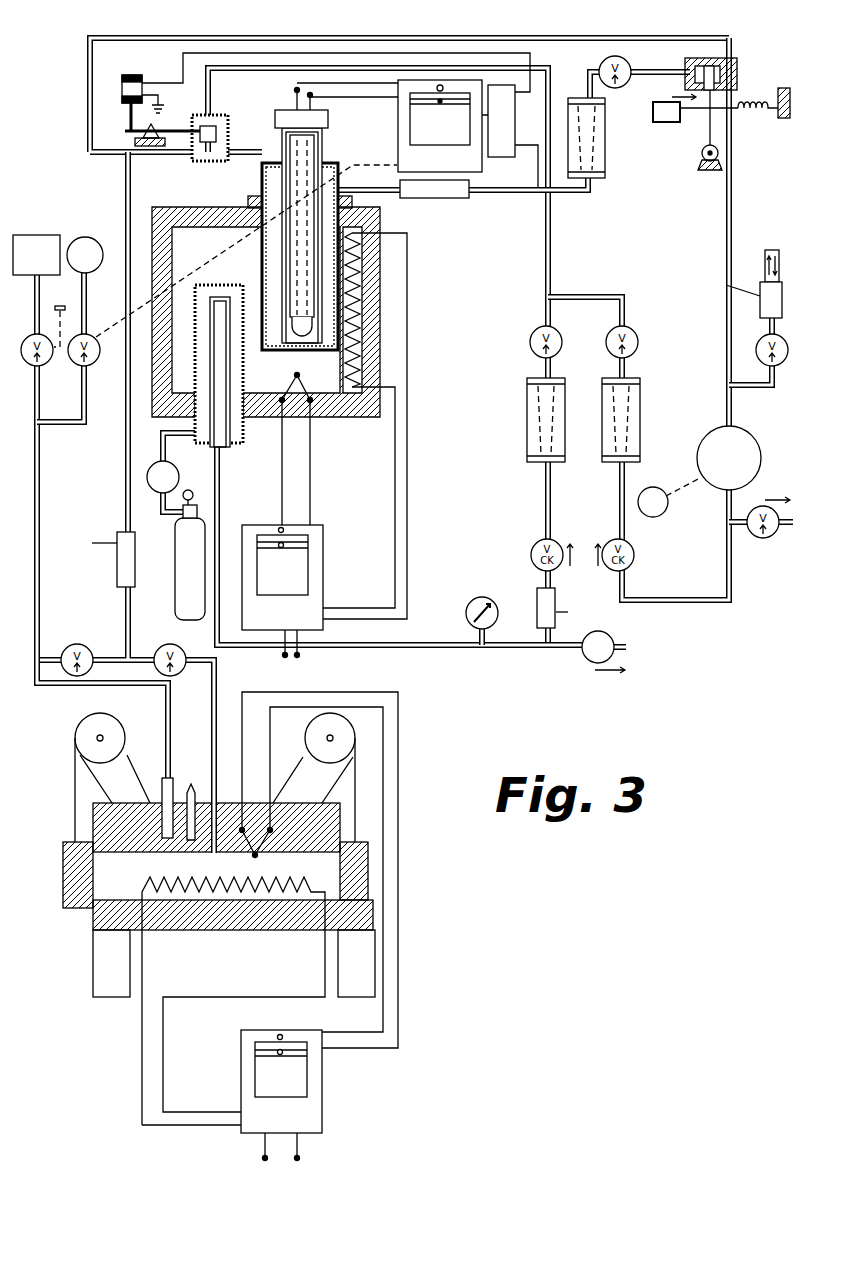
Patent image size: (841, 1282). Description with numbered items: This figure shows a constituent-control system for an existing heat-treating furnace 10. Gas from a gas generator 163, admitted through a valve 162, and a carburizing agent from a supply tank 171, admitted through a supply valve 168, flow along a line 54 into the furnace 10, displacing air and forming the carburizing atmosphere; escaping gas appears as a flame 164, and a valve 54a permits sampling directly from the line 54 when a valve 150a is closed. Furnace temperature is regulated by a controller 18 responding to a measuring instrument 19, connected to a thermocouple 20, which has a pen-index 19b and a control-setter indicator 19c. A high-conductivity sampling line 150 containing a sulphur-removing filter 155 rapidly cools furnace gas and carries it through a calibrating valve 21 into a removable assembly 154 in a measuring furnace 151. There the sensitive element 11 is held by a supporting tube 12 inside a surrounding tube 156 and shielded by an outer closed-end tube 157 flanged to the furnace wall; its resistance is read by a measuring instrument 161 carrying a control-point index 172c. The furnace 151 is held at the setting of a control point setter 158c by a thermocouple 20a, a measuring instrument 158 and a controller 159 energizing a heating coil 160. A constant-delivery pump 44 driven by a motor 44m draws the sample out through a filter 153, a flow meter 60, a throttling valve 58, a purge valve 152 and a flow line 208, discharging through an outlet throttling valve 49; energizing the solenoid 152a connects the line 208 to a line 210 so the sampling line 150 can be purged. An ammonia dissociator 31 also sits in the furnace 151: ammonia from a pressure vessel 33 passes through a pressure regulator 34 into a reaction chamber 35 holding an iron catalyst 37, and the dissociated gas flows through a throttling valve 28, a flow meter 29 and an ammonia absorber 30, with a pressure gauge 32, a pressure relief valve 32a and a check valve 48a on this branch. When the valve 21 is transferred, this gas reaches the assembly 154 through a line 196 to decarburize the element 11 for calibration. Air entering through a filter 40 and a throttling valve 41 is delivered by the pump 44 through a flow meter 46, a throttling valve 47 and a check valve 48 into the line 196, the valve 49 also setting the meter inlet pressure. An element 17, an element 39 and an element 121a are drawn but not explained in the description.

The line 210 is at (302, 37).
The index of the control point setter 172c is at (441, 85).
The throttling valve 58 is at (612, 56).
The purge valve 152 is at (737, 60).
The actuator 121a is at (122, 90).
The line 196 is at (276, 72).
The calibrating valve 21 is at (228, 140).
The measuring instrument 161 is at (382, 125).
The removable assembly 154 is at (338, 145).
The supporting tube 12 is at (330, 168).
The tube 156 is at (262, 183).
The sampling line 150 is at (131, 193).
The outer closed-end tube 157 is at (345, 214).
The filter 153 is at (445, 200).
The solenoid 152a is at (653, 116).
The flow meter 60 is at (600, 170).
The flow line 208 is at (727, 205).
The gas inlet 39 is at (775, 250).
The gas generator 163 is at (37, 234).
The supply tank 171 is at (86, 237).
The furnace 151 is at (205, 258).
The reaction chamber 35 is at (204, 294).
The ammonia dissociating catalyst 37 is at (231, 370).
The sensitive element 11 is at (304, 338).
The heating coil 160 is at (358, 348).
The valve 162 is at (42, 366).
The supply valve 168 is at (91, 366).
The thermocouple 20a is at (313, 401).
The throttling valve 28 is at (533, 337).
The throttling valve 47 is at (637, 340).
The flow meter 29 is at (527, 400).
The flow meter 46 is at (640, 398).
The filter 40 is at (762, 304).
The throttling valve 41 is at (775, 370).
The pump 44 is at (705, 446).
The motor 44m is at (666, 494).
The check valve 48a is at (536, 544).
The check valve 48 is at (634, 558).
The throttling valve 49 is at (764, 540).
The pressure gauge 32 is at (478, 598).
The ammonia scavenger or absorber 30 is at (540, 604).
The pressure relief valve 32a is at (585, 653).
The line 54 is at (41, 490).
The pressure regulator 34 is at (176, 474).
The ammonia dissociating apparatus 31 is at (242, 438).
The filter 155 is at (117, 583).
The control point setter 158c is at (279, 527).
The measuring instrument 158 is at (316, 528).
The controller 159 is at (325, 622).
The valve 54a is at (75, 644).
The pressure vessel 33 is at (178, 606).
The valve 150a is at (176, 650).
The flame 164 is at (191, 789).
The heater 17 is at (204, 880).
The furnace 10 is at (118, 890).
The thermocouple 20 is at (264, 858).
The control-setter indicator 19c is at (279, 1035).
The pen-index 19b is at (278, 1054).
The measuring instrument 19 is at (315, 1079).
The controller 18 is at (322, 1124).